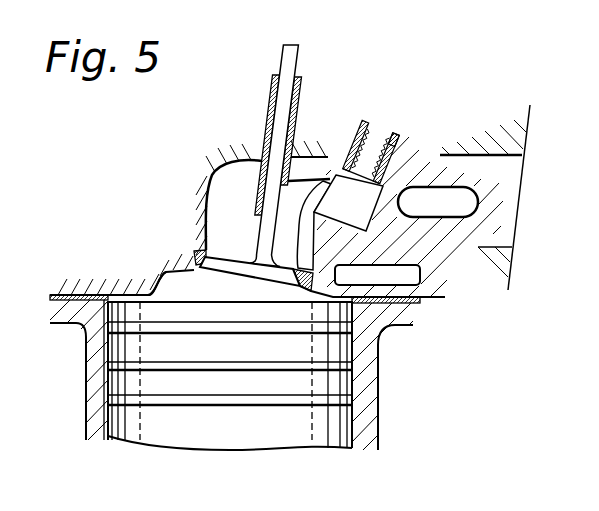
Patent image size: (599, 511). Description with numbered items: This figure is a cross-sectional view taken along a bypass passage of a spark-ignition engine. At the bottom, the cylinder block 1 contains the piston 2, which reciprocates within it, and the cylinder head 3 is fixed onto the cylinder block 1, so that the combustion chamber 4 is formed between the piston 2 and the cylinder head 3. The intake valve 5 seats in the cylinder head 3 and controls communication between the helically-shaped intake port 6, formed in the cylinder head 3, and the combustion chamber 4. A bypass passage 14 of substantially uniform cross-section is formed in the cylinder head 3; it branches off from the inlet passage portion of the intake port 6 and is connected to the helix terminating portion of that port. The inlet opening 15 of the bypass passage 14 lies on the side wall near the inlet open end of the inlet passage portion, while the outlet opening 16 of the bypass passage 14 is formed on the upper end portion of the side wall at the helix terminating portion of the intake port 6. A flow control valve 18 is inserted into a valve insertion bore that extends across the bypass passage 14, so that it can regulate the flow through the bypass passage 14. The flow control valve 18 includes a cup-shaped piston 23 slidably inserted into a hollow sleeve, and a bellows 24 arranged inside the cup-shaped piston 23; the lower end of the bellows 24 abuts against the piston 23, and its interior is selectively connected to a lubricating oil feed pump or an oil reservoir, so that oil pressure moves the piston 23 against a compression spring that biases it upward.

The cylinder block 1 is at (92, 380).
The piston 2 is at (158, 428).
The cylinder head 3 is at (147, 272).
The combustion chamber 4 is at (187, 292).
The intake valve 5 is at (263, 216).
The helically-shaped intake port 6 is at (478, 160).
The bypass passage 14 is at (397, 178).
The inlet opening 15 is at (452, 212).
The outlet opening 16 is at (310, 212).
The flow control valve 18 is at (371, 112).
The cup-shaped piston 23 is at (398, 146).
The bellows 24 is at (386, 126).